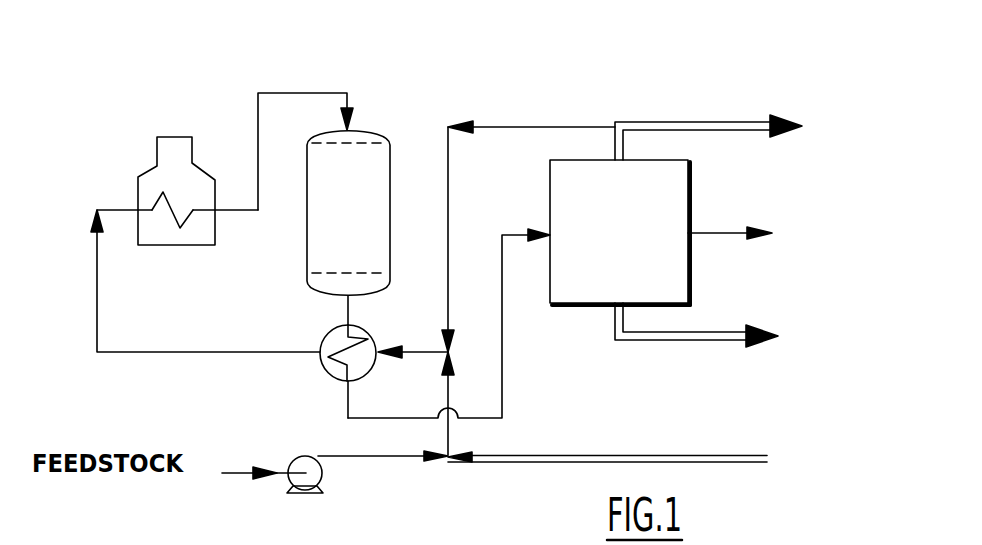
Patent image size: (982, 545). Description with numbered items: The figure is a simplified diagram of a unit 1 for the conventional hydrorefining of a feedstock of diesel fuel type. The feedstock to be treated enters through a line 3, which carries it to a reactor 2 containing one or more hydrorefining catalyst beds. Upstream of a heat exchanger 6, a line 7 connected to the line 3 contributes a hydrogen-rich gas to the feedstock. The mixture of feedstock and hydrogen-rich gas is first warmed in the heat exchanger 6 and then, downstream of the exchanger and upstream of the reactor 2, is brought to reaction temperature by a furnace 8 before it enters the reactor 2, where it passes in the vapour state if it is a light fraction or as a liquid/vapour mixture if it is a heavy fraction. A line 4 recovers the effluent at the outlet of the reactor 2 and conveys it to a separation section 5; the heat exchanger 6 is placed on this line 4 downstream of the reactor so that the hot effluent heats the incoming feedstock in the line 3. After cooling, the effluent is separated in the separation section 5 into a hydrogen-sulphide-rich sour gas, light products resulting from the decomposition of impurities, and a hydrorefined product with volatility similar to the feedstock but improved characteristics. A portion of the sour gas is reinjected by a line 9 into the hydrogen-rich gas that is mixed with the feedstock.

The unit 1 is at (582, 94).
The reactor 2 is at (310, 212).
The line 3 is at (237, 353).
The line 4 is at (502, 345).
The separation section 5 is at (627, 229).
The heat exchanger 6 is at (331, 375).
The line 7 is at (587, 455).
The furnace 8 is at (165, 180).
The line 9 is at (533, 127).